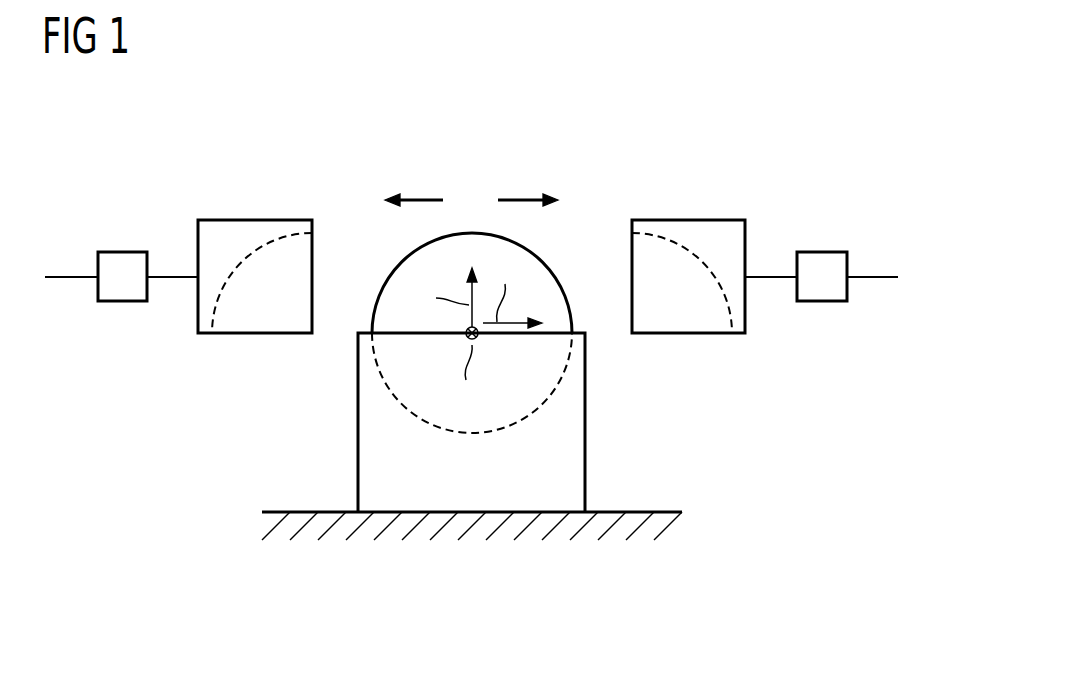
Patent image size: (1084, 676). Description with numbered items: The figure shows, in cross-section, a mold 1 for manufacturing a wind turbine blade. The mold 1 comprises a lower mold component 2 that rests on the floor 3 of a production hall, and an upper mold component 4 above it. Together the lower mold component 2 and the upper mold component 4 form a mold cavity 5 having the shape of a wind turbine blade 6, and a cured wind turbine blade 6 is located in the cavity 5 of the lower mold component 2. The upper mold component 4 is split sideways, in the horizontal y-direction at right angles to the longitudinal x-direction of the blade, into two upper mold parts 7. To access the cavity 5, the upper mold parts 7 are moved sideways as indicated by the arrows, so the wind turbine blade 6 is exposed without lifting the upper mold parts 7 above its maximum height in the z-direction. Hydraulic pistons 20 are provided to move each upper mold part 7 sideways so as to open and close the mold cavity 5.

The mold 1 is at (613, 108).
The lower mold component 2 is at (923, 345).
The floor 3 is at (293, 522).
The upper mold component 4 is at (905, 197).
The mold cavity 5 is at (272, 240).
The wind turbine blade 6 is at (385, 278).
The upper mold parts 7 is at (222, 220).
The hydraulic pistons 20 is at (122, 252).